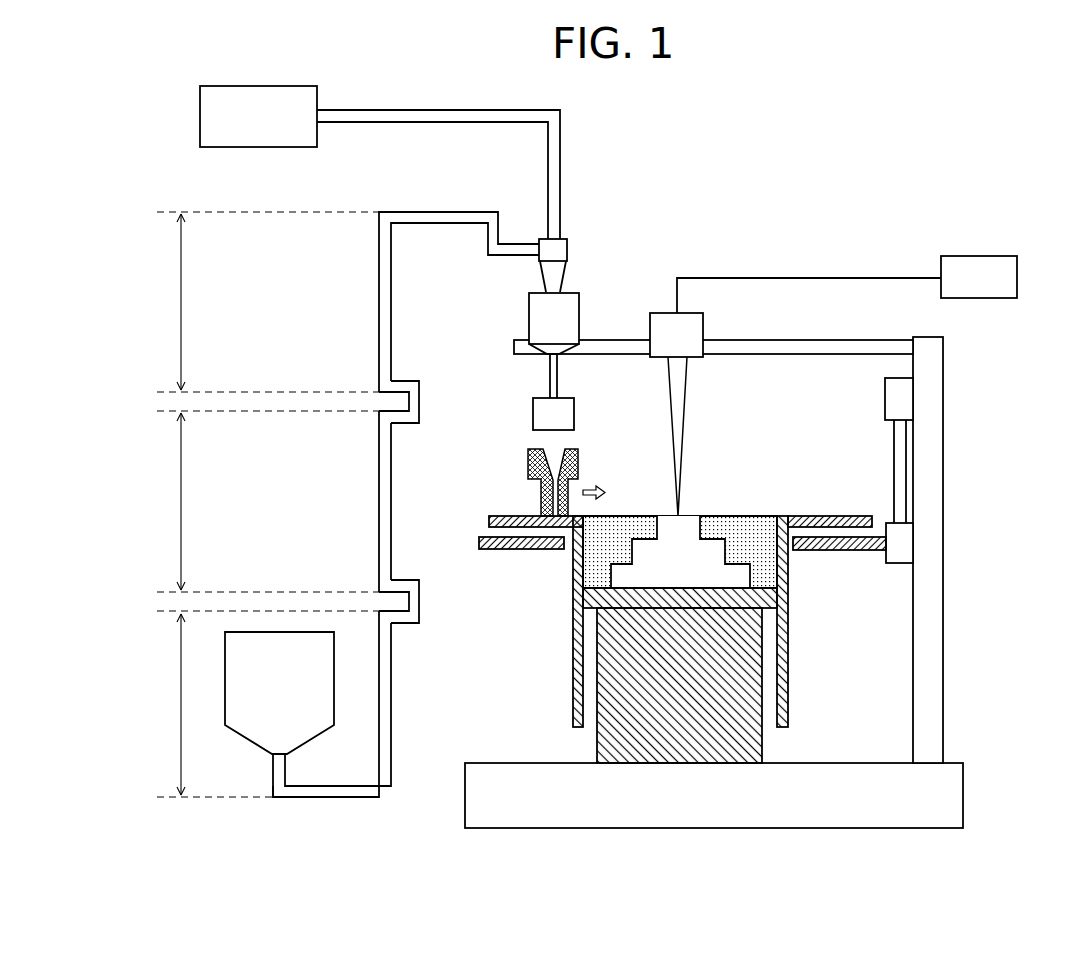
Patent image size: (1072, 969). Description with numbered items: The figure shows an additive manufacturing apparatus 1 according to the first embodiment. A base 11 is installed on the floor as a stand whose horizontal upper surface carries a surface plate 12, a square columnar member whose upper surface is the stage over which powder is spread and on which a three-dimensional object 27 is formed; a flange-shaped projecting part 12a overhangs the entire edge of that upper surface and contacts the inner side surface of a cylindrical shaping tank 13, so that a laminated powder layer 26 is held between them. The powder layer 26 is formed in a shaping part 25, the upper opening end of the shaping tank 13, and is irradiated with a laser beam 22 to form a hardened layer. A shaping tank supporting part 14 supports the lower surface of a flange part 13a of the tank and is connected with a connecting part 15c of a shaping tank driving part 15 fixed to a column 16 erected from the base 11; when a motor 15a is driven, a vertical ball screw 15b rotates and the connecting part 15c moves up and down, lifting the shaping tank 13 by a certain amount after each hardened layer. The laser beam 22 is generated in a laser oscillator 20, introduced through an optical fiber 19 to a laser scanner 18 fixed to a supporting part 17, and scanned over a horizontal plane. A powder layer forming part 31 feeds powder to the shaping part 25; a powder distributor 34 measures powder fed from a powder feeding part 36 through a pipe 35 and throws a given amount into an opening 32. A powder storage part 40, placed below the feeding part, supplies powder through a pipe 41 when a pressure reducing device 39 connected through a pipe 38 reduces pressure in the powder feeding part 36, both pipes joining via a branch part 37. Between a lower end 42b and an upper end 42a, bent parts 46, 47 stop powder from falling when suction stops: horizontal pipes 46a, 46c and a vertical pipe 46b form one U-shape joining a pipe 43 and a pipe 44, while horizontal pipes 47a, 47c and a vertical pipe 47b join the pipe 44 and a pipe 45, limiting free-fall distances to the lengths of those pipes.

The additive manufacturing apparatus 1 is at (830, 190).
The base 11 is at (697, 811).
The surface plate 12 is at (713, 675).
The projecting part 12a is at (770, 612).
The shaping tank 13 is at (690, 584).
The flange part 13a is at (824, 514).
The shaping tank supporting part 14 is at (514, 551).
The shaping tank driving part 15 is at (973, 470).
The motor 15a is at (910, 398).
The ball screw 15b is at (906, 462).
The connecting part 15c is at (952, 543).
The column 16 is at (943, 690).
The supporting part 17 is at (790, 340).
The laser scanner 18 is at (662, 352).
The optical fiber 19 is at (830, 278).
The laser oscillator 20 is at (964, 291).
The laser beam 22 is at (684, 410).
The shaping part 25 is at (688, 514).
The powder layer 26 is at (742, 514).
The three-dimensional object 27 is at (663, 571).
The powder layer forming part 31 is at (573, 456).
The opening 32 is at (545, 440).
The powder distributor 34 is at (574, 410).
The pipe 35 is at (558, 378).
The powder feeding part 36 is at (539, 336).
The branch part 37 is at (567, 252).
The pipe 38 is at (562, 175).
The pressure reducing device 39 is at (243, 131).
The powder storage part 40 is at (264, 703).
The pipe 41 is at (419, 472).
The upper end 42a is at (380, 211).
The lower end 42b is at (380, 800).
The pipe 43 is at (379, 292).
The pipe 44 is at (379, 493).
The pipe 45 is at (391, 712).
The bent part 46 is at (432, 403).
The horizontal pipe 46a is at (408, 379).
The vertical pipe 46b is at (420, 413).
The horizontal pipe 46c is at (409, 428).
The bent part 47 is at (431, 602).
The horizontal pipe 47a is at (409, 578).
The vertical pipe 47b is at (421, 612).
The horizontal pipe 47c is at (408, 625).